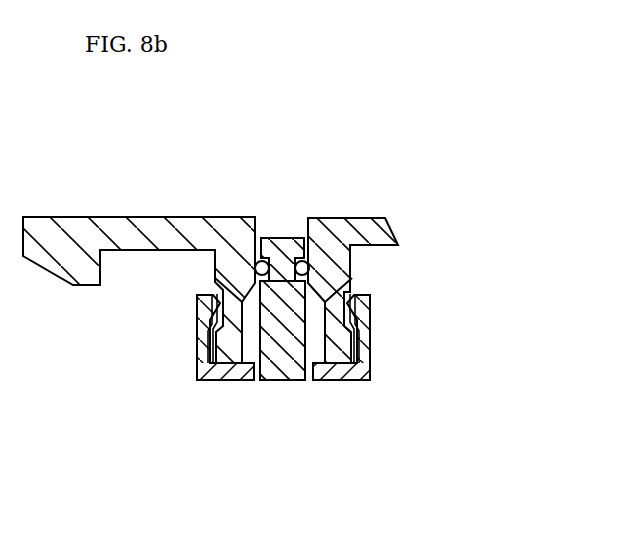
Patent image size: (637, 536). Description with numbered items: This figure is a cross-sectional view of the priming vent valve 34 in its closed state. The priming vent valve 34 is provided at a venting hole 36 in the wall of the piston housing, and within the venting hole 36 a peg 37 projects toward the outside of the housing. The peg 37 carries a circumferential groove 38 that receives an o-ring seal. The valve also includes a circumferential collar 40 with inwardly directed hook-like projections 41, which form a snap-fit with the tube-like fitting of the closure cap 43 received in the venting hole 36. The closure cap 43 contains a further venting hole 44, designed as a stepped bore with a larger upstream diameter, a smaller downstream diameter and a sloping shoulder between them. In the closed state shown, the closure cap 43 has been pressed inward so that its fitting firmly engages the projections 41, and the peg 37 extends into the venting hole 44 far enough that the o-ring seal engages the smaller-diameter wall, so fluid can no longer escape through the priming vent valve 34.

The priming vent valve 34 is at (315, 160).
The venting hole 36 is at (257, 382).
The peg 37 is at (287, 322).
The groove 38 is at (270, 236).
The collar 40 is at (200, 313).
The projections 41 is at (212, 318).
The closure cap 43 is at (358, 223).
The venting hole 44 is at (280, 228).